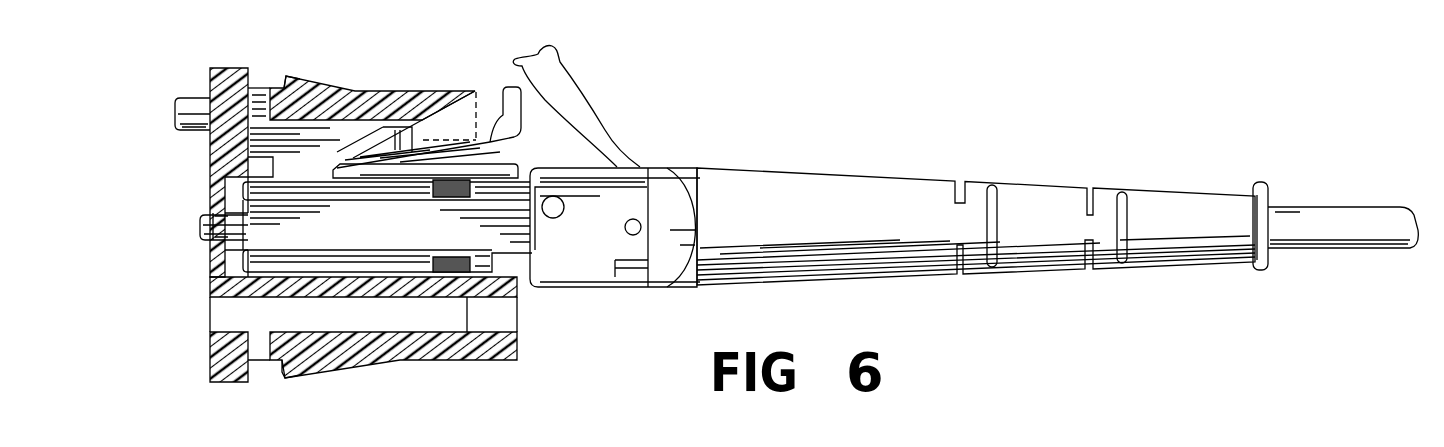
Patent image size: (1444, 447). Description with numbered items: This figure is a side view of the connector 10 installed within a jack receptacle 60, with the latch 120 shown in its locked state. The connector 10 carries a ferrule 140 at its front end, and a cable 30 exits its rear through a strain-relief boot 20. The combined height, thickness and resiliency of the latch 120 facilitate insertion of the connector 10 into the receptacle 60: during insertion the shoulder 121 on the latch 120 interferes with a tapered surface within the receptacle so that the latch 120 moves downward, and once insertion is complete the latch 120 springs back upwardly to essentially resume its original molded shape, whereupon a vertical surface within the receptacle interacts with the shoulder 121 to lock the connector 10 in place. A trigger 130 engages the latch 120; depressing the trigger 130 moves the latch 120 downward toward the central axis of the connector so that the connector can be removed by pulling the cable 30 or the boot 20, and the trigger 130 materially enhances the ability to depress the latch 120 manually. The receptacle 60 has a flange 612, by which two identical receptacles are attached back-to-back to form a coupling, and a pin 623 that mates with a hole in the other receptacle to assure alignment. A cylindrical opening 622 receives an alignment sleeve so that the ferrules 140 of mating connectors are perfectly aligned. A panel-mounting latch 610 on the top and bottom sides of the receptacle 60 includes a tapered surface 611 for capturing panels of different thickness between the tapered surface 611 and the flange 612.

The connector 10 is at (566, 302).
The strain-relief boot 20 is at (839, 170).
The cable 30 is at (1323, 206).
The jack receptacle 60 is at (198, 346).
The latch 120 is at (447, 118).
The shoulder 121 is at (412, 127).
The trigger 130 is at (563, 72).
The ferrule 140 is at (197, 227).
The panel-mounting latch 610 is at (292, 78).
The tapered surface 611 is at (283, 88).
The flange 612 is at (228, 70).
The cylindrical opening 622 is at (207, 213).
The pin 623 is at (192, 103).